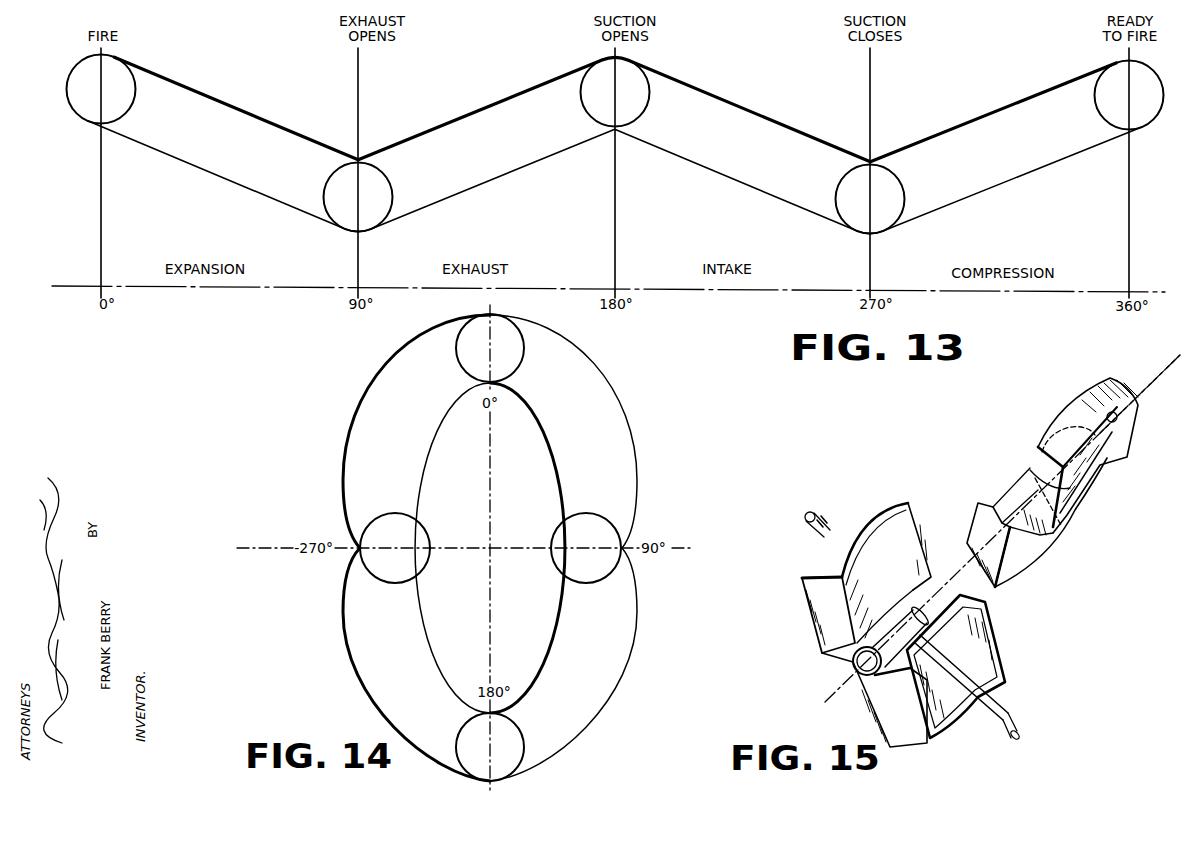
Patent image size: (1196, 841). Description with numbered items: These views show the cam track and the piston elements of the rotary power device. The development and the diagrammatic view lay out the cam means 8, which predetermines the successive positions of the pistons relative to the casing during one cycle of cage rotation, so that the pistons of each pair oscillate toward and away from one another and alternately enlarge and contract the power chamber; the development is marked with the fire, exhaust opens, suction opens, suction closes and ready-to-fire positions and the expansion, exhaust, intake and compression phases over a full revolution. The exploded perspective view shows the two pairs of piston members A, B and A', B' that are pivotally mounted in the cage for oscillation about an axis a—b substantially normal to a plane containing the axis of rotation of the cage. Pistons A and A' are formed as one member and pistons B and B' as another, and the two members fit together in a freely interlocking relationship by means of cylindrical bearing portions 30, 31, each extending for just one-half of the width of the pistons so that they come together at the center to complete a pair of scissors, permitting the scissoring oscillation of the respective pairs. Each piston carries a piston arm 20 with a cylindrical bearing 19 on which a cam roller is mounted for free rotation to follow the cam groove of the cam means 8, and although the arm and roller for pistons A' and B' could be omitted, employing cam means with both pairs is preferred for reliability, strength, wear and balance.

In FIG. 14, the cam means 8 is at (633, 415).
In FIG. 15, the cylindrical bearing 19 is at (809, 514).
In FIG. 15, the piston arm 20 is at (835, 522).
In FIG. 15, the cylindrical bearing portion 30 is at (878, 627).
In FIG. 15, the cylindrical bearing portion 31 is at (1057, 440).
In FIG. 15, the piston member A is at (1084, 455).
In FIG. 15, the piston member A' is at (1037, 522).
In FIG. 15, the piston member B is at (853, 625).
In FIG. 15, the piston member B' is at (974, 668).
In FIG. 15, the axis end point a is at (823, 714).
In FIG. 15, the axis end point b is at (1180, 356).